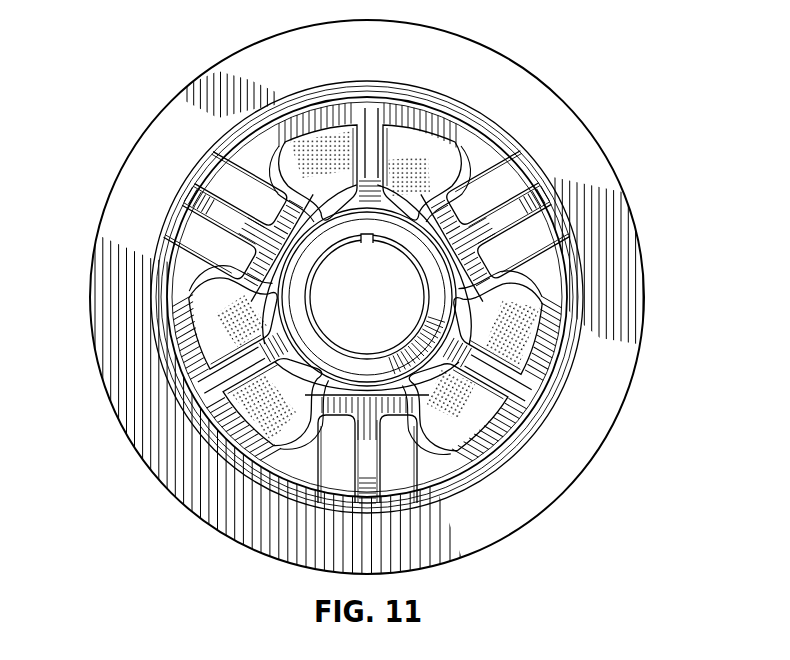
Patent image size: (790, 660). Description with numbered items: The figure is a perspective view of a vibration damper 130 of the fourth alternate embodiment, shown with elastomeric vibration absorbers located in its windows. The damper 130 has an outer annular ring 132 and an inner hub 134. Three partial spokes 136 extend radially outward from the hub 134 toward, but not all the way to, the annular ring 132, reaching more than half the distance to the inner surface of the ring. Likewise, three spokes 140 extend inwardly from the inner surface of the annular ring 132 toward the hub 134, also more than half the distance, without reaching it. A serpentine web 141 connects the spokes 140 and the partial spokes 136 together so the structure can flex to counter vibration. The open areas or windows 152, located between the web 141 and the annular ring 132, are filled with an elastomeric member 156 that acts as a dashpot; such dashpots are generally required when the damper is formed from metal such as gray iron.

The vibration damper 130 is at (585, 82).
The annular ring 132 is at (597, 157).
The inner hub 134 is at (422, 250).
The partial spokes 136 is at (372, 110).
The spokes 140 is at (528, 198).
The serpentine web 141 is at (171, 322).
The windows 152 is at (227, 160).
The elastomeric member 156 is at (250, 400).